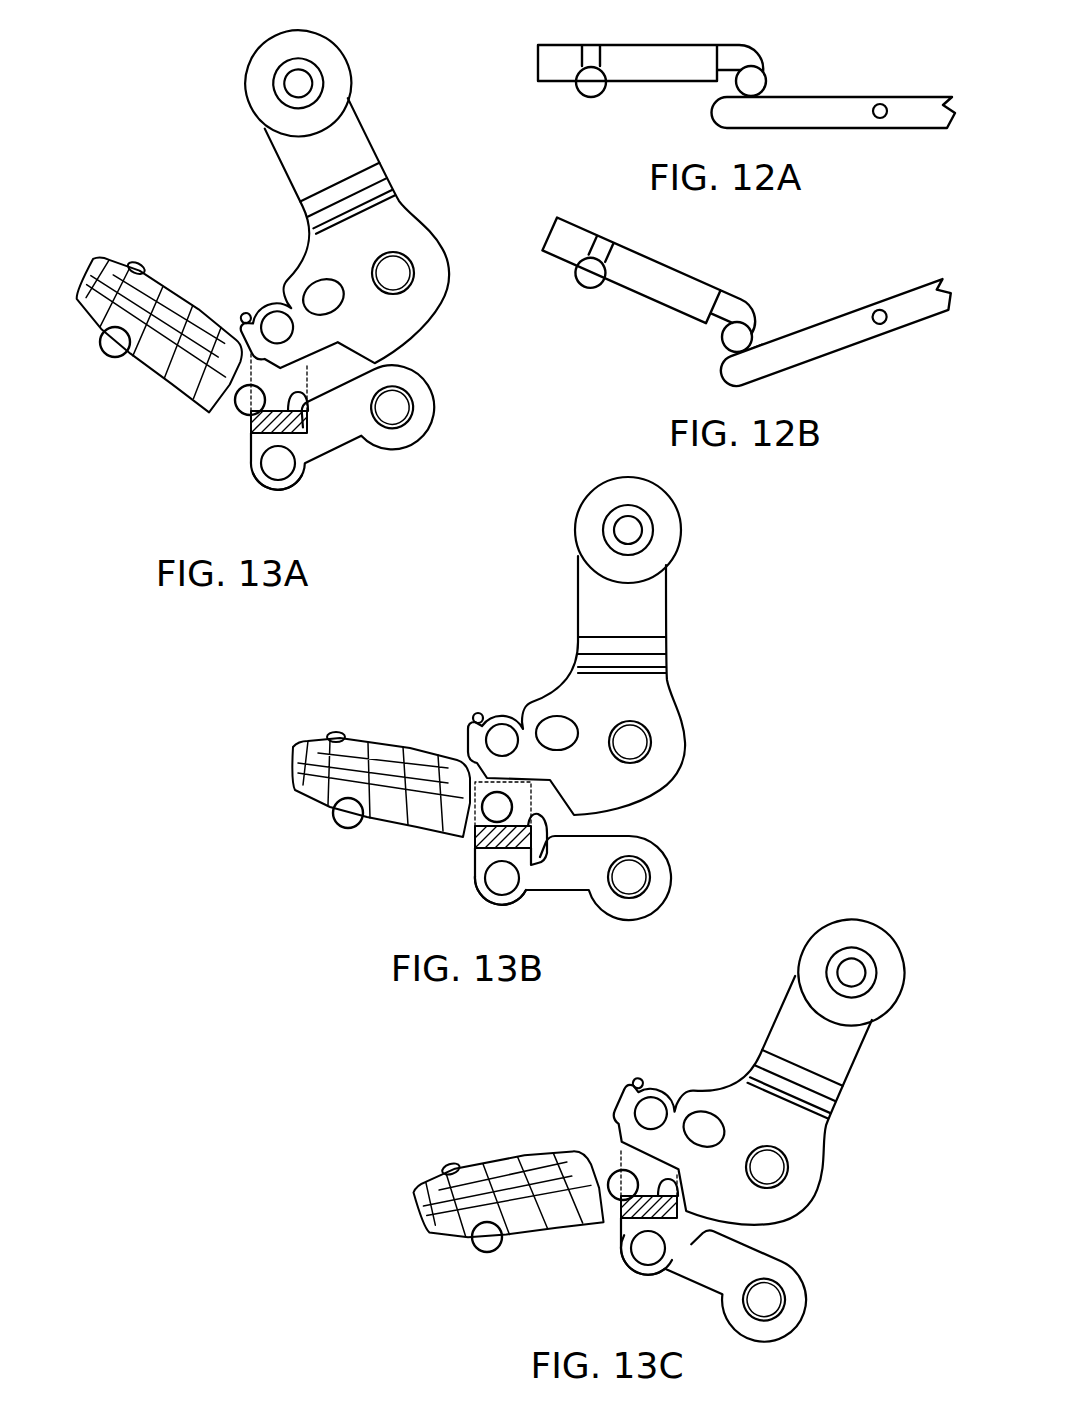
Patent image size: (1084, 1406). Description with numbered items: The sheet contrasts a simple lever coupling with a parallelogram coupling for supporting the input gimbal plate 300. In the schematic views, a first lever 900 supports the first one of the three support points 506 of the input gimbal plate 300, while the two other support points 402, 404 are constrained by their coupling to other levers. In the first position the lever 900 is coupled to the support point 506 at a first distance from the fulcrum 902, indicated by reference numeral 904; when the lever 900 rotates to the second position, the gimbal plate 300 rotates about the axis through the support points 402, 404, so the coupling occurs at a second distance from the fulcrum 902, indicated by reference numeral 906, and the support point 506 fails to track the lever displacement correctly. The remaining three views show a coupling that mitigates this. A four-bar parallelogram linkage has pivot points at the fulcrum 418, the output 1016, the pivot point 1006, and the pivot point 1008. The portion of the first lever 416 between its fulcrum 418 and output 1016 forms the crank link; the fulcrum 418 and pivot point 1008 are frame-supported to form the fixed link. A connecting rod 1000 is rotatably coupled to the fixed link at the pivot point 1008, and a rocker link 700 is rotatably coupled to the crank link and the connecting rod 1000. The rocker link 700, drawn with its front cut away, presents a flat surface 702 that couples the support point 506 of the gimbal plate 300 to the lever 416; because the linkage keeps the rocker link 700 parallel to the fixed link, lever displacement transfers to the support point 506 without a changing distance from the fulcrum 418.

In FIG. 12A, the input gimbal plate 300 is at (560, 45).
In FIG. 12B, the input gimbal plate 300 is at (653, 260).
In FIG. 13A, the input gimbal plate 300 is at (110, 268).
In FIG. 13B, the input gimbal plate 300 is at (322, 742).
In FIG. 13C, the input gimbal plate 300 is at (418, 1195).
In FIG. 13A, the support point 402 is at (118, 268).
In FIG. 13B, the support point 402 is at (332, 735).
In FIG. 13C, the support point 402 is at (440, 1176).
In FIG. 12A, the support point 404 is at (590, 97).
In FIG. 12B, the support point 404 is at (578, 275).
In FIG. 13A, the support point 404 is at (103, 347).
In FIG. 13B, the support point 404 is at (335, 818).
In FIG. 13C, the support point 404 is at (482, 1247).
In FIG. 12A, the first support point 506 is at (768, 80).
In FIG. 12B, the first support point 506 is at (722, 343).
In FIG. 13A, the first support point 506 is at (240, 408).
In FIG. 13B, the first support point 506 is at (482, 815).
In FIG. 13C, the first support point 506 is at (625, 1172).
In FIG. 12A, the first lever 900 is at (840, 128).
In FIG. 12B, the first lever 900 is at (863, 342).
In FIG. 12A, the fulcrum 902 is at (882, 103).
In FIG. 12B, the fulcrum 902 is at (878, 312).
In FIG. 12A, the first distance 904 is at (752, 99).
In FIG. 12B, the first distance 904 is at (758, 350).
In FIG. 12A, the second distance 906 is at (738, 99).
In FIG. 12B, the second distance 906 is at (745, 358).
In FIG. 13A, the first lever 416 is at (288, 277).
In FIG. 13B, the first lever 416 is at (553, 692).
In FIG. 13C, the first lever 416 is at (730, 1083).
In FIG. 13A, the fulcrum 418 is at (393, 273).
In FIG. 13B, the fulcrum 418 is at (632, 742).
In FIG. 13C, the fulcrum 418 is at (767, 1167).
In FIG. 13A, the output 1016 is at (276, 326).
In FIG. 13B, the output 1016 is at (500, 742).
In FIG. 13C, the output 1016 is at (649, 1113).
In FIG. 13A, the rocker link 700 is at (254, 428).
In FIG. 13B, the rocker link 700 is at (473, 847).
In FIG. 13C, the rocker link 700 is at (620, 1227).
In FIG. 13A, the flat surface 702 is at (318, 397).
In FIG. 13B, the flat surface 702 is at (546, 845).
In FIG. 13C, the flat surface 702 is at (772, 1218).
In FIG. 13A, the connecting rod 1000 is at (362, 448).
In FIG. 13B, the connecting rod 1000 is at (583, 890).
In FIG. 13C, the connecting rod 1000 is at (703, 1290).
In FIG. 13A, the pivot point 1006 is at (275, 475).
In FIG. 13B, the pivot point 1006 is at (500, 885).
In FIG. 13C, the pivot point 1006 is at (645, 1252).
In FIG. 13A, the pivot point 1008 is at (398, 410).
In FIG. 13B, the pivot point 1008 is at (640, 890).
In FIG. 13C, the pivot point 1008 is at (768, 1302).